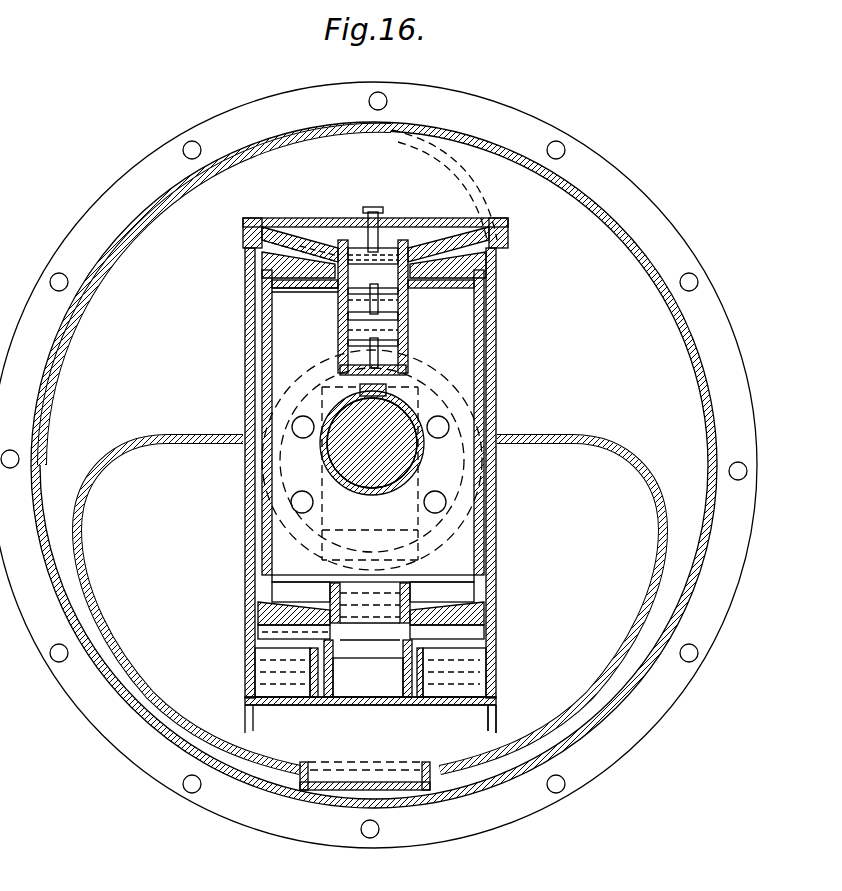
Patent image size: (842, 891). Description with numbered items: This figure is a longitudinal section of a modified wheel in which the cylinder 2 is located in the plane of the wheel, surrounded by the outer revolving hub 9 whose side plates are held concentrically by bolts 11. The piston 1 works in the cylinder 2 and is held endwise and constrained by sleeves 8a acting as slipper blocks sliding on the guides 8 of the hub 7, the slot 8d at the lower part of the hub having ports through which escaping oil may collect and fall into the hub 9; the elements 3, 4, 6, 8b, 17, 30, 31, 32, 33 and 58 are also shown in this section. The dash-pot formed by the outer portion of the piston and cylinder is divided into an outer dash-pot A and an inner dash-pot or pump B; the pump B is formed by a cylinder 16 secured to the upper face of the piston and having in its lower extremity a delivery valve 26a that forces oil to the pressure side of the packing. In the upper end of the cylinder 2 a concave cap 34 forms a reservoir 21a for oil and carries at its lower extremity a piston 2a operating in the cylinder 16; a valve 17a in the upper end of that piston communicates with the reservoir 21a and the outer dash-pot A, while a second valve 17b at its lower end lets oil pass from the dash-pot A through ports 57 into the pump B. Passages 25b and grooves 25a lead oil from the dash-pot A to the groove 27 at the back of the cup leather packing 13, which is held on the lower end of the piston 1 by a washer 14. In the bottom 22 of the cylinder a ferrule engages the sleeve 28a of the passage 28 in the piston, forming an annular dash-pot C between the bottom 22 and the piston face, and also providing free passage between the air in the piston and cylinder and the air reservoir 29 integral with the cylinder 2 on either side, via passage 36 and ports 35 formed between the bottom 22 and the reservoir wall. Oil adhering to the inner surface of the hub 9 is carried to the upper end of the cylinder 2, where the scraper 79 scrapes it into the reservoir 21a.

The piston 1 is at (474, 343).
The cylinder 2 is at (497, 318).
The piston 2a is at (338, 293).
The shaft 3 is at (372, 456).
The shaft bore 4 is at (372, 459).
The block 6 is at (386, 391).
The wheel hub 7 is at (422, 545).
The guides 8 is at (370, 473).
The sleeves 8a is at (370, 469).
The roller 8b is at (378, 496).
The slot 8d is at (370, 539).
The wheel hub 9 is at (88, 291).
The bolts 11 is at (62, 274).
The packing 13 is at (258, 636).
The washer 14 is at (296, 633).
The cylinder 16 is at (406, 320).
The packing blocks 17 is at (250, 266).
The valve 17a is at (386, 250).
The second valve 17b is at (402, 301).
The reservoir 21a is at (305, 242).
The bottom 22 is at (455, 704).
The grooves 25a is at (272, 340).
The passages 25b is at (415, 290).
The delivery valve 26a is at (406, 347).
The groove 27 is at (258, 612).
The passage 28 is at (316, 610).
The sleeve 28a is at (442, 593).
The reservoir 29 is at (370, 604).
The lower block 30 is at (405, 681).
The column 31 is at (340, 612).
The passage 32 is at (405, 656).
The partition wall 33 is at (332, 672).
The concave cap 34 is at (283, 223).
The ports 35 is at (494, 727).
The passage 36 is at (365, 760).
The ports 57 is at (400, 268).
The block 58 is at (358, 375).
The scraper 79 is at (470, 200).
The outer dash-pot A is at (489, 243).
The inner dash-pot or pump B is at (338, 318).
The annular dash-pot C is at (370, 672).